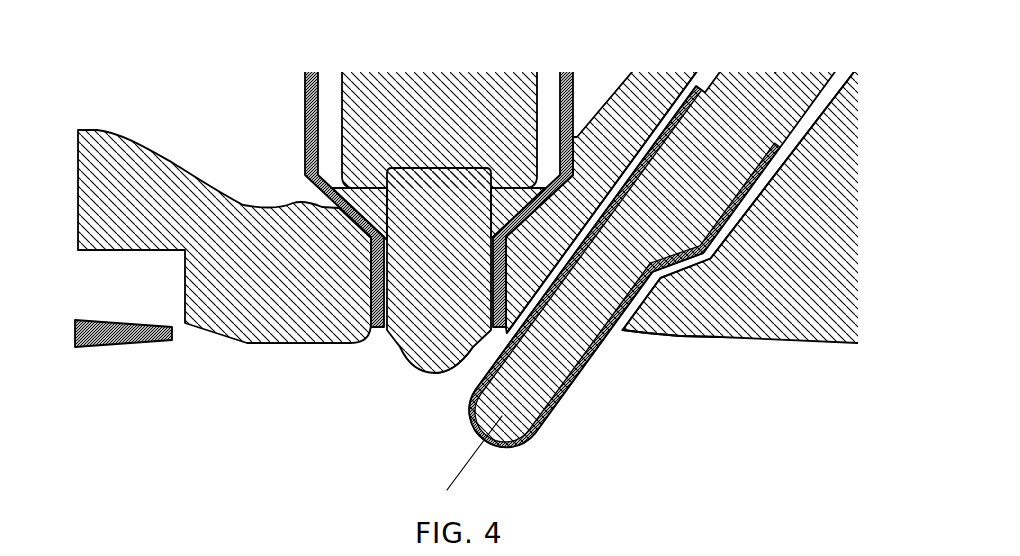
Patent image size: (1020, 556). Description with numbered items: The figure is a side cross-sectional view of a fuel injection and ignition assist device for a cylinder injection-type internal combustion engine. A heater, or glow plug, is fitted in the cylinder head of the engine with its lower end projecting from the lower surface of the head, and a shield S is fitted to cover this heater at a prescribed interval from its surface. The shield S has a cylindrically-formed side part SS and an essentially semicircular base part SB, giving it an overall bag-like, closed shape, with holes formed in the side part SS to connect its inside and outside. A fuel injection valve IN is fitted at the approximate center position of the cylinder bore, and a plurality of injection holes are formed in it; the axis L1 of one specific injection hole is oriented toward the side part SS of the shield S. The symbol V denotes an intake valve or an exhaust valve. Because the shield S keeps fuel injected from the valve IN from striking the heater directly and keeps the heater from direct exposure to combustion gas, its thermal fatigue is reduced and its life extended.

The intake valve or exhaust valve V is at (115, 348).
The fuel injection valve IN is at (388, 340).
The axis L1 is at (477, 362).
The base part SB is at (498, 452).
The shield S is at (661, 244).
The side part SS is at (561, 449).